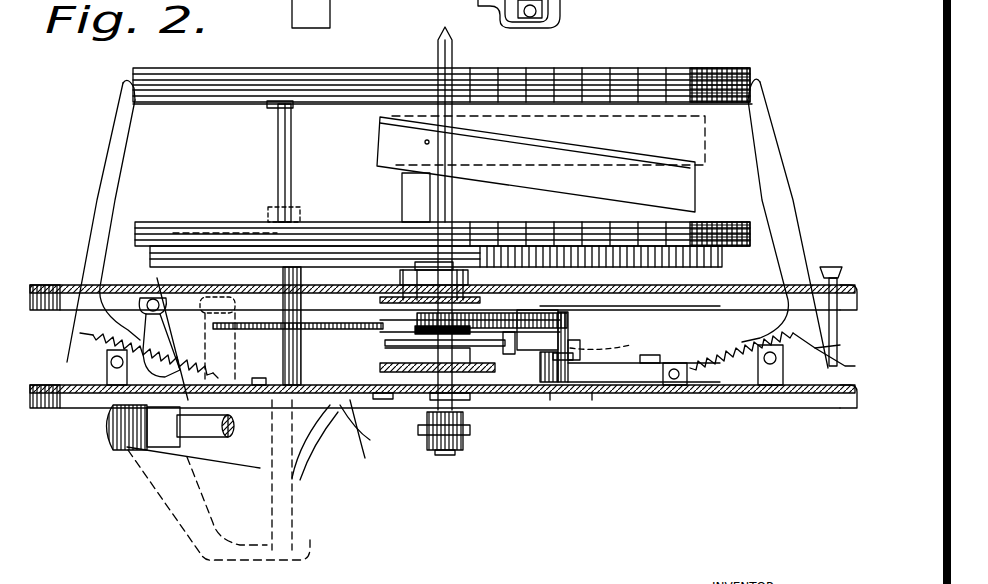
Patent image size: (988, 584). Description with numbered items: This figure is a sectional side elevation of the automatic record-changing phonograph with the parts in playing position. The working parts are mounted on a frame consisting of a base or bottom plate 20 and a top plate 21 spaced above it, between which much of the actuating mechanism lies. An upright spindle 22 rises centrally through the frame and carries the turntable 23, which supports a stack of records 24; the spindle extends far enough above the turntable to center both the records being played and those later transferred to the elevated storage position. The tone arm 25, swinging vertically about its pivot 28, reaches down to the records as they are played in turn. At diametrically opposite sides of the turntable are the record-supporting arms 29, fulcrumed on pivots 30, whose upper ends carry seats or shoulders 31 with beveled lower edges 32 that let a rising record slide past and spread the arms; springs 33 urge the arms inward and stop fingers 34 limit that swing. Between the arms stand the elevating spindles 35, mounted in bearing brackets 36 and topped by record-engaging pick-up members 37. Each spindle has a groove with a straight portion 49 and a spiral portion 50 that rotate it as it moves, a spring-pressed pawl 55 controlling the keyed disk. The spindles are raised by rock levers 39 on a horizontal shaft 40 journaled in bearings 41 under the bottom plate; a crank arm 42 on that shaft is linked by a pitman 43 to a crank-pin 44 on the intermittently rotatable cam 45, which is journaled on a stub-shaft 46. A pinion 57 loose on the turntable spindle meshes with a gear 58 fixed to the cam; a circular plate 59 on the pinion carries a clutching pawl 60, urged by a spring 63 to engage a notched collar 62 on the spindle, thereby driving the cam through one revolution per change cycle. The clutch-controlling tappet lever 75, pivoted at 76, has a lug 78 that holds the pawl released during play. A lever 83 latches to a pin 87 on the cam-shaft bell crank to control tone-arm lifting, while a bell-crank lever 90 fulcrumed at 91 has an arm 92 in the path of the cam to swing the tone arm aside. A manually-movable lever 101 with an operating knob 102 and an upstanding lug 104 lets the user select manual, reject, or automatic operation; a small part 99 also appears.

The base or bottom plate 20 is at (692, 410).
The top plate 21 is at (410, 178).
The upright spindle 22 is at (452, 197).
The turntable 23 is at (442, 242).
The records 24 is at (676, 68).
The tone arm 25 is at (541, 164).
The pivot 28 is at (425, 142).
The record-supporting arms 29 is at (97, 200).
The pivots 30 is at (108, 363).
The seats or shoulders 31 is at (137, 104).
The lower edges 32 is at (752, 106).
The springs 33 is at (143, 345).
The stop fingers 34 is at (125, 406).
The elevating spindles 35 is at (272, 152).
The bearing brackets 36 is at (263, 346).
The pick-up members 37 is at (356, 108).
The rock levers 39 is at (336, 446).
The horizontal shaft 40 is at (209, 438).
The bearings 41 is at (134, 456).
The crank arm 42 is at (157, 331).
The link or pitman 43 is at (340, 250).
The crank-pin 44 is at (398, 276).
The cam 45 is at (250, 320).
The stub-shaft 46 is at (362, 418).
The straight portion 49 is at (439, 336).
The spiral portion 50 is at (300, 520).
The pawl 55 is at (256, 386).
The pinion 57 is at (497, 311).
The gear 58 is at (572, 328).
The circular plate 59 is at (396, 339).
The clutching pawl 60 is at (498, 352).
The collar 62 is at (508, 400).
The spring 63 is at (470, 420).
The tappet lever 75 is at (590, 357).
The pivot 76 is at (595, 395).
The lug 78 is at (555, 395).
The lever 83 is at (380, 440).
The pin 87 is at (365, 458).
The bell-crank lever 90 is at (570, 318).
The fulcrum 91 is at (610, 301).
The arm 92 is at (543, 307).
The collar 99 is at (505, 392).
The manually-movable lever 101 is at (847, 364).
The operating knob 102 is at (837, 304).
The upstanding lug 104 is at (616, 350).